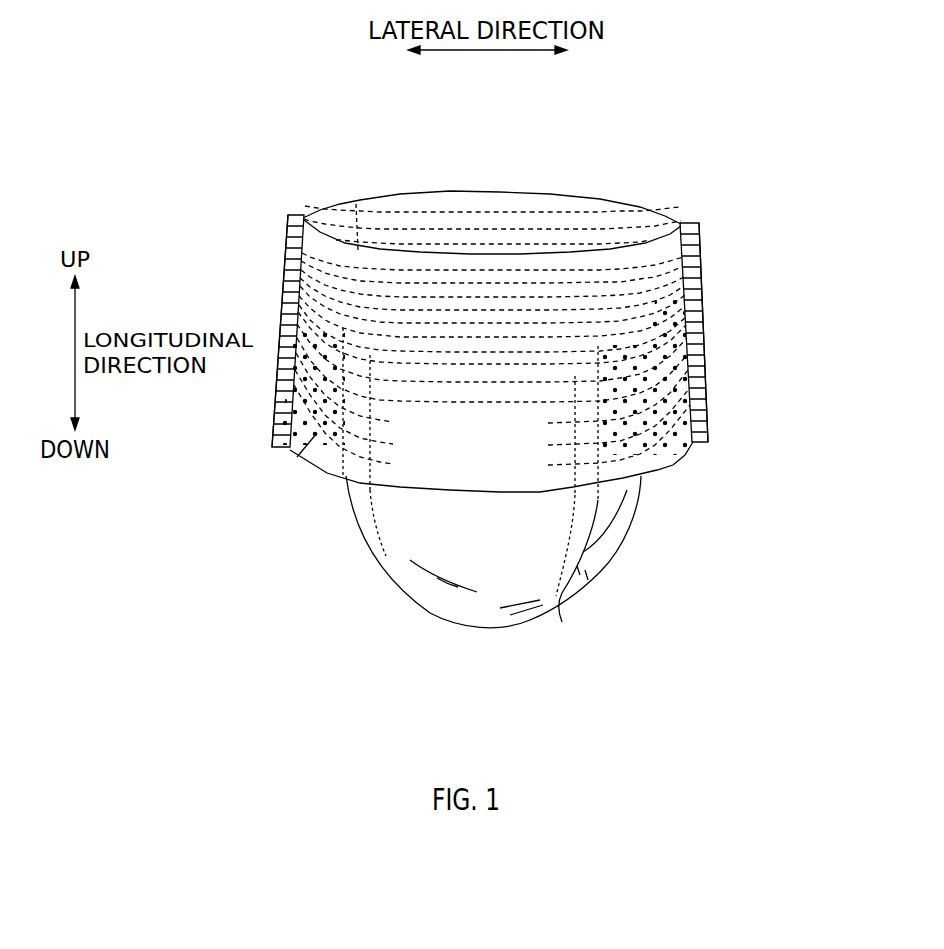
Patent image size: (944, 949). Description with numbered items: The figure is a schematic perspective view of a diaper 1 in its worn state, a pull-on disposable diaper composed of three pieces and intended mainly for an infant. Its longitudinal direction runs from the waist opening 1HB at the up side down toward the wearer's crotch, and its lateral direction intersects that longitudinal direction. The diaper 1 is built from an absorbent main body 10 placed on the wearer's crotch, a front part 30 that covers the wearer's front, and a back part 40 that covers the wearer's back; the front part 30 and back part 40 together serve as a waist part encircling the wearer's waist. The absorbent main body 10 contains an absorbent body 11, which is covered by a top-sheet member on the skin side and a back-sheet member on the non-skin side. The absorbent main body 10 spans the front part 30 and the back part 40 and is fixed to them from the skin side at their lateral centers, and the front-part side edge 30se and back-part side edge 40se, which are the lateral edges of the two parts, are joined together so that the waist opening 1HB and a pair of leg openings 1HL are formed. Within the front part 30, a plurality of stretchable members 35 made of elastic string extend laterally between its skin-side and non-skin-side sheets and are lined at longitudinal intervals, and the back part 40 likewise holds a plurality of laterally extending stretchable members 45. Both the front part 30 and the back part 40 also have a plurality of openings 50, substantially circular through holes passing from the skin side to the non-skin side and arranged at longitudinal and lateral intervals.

The diaper 1 is at (594, 134).
The absorbent main body 10 is at (440, 618).
The absorbent body 11 is at (562, 618).
The front part 30 is at (427, 252).
The back part 40 is at (465, 192).
The stretchable member 35 is at (683, 222).
The stretchable member 45 is at (350, 198).
The opening 50 is at (292, 451).
The waist opening 1HB is at (484, 215).
The leg opening 1HL is at (360, 551).
The front-part side edge 30se is at (287, 226).
The back-part side edge 40se is at (702, 252).